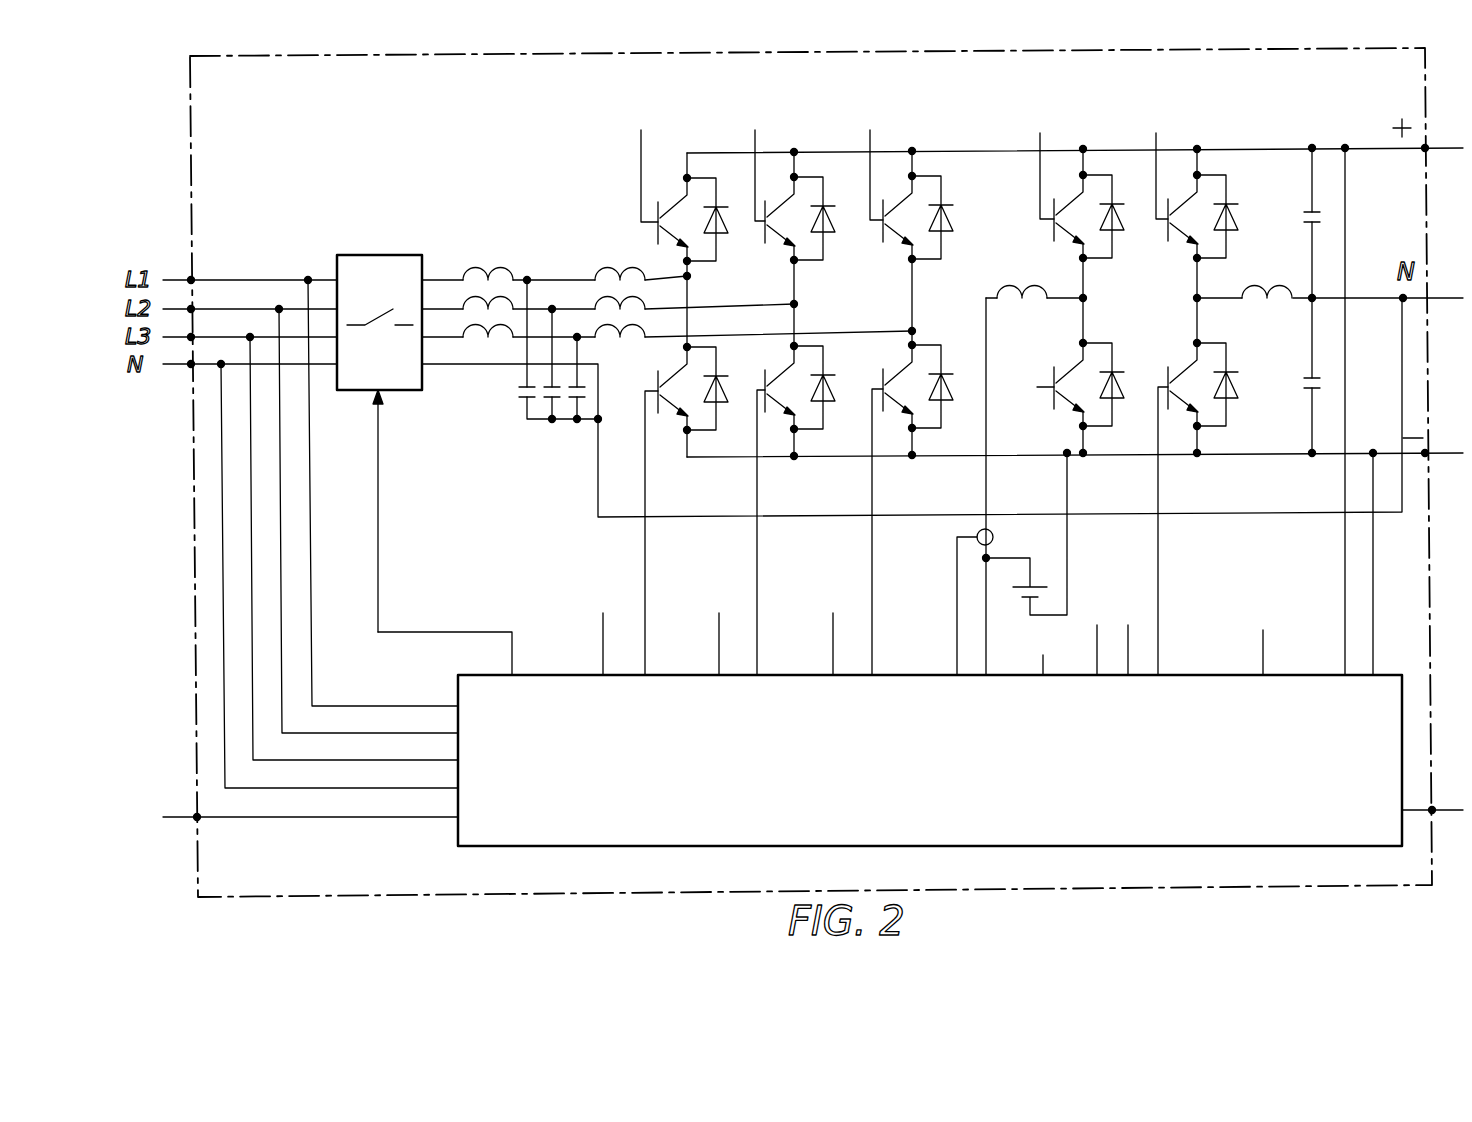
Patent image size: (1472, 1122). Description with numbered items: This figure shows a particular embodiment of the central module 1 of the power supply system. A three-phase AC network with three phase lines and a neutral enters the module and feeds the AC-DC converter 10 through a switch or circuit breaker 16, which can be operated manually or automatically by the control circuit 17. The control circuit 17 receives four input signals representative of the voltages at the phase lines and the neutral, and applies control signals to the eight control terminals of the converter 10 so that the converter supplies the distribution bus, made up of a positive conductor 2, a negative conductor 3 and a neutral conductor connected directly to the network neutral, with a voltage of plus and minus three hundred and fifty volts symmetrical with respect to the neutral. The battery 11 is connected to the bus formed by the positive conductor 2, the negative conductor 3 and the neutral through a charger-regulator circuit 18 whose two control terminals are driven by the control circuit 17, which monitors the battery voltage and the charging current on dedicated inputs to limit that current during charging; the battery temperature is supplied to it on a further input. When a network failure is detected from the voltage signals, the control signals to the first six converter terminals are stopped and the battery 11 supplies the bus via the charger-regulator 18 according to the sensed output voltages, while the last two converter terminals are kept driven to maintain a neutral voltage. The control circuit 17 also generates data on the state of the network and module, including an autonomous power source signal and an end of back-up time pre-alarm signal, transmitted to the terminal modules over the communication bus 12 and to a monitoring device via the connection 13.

The central module 1 is at (1427, 86).
The positive conductor 2 is at (1440, 148).
The negative conductor 3 is at (1443, 450).
The AC-DC converter 10 is at (607, 190).
The battery 11 is at (1033, 587).
The communication bus 12 is at (1446, 808).
The connection 13 is at (179, 820).
The circuit breaker 16 is at (360, 255).
The control circuit 17 is at (1022, 846).
The charger-regulator circuit 18 is at (1023, 206).